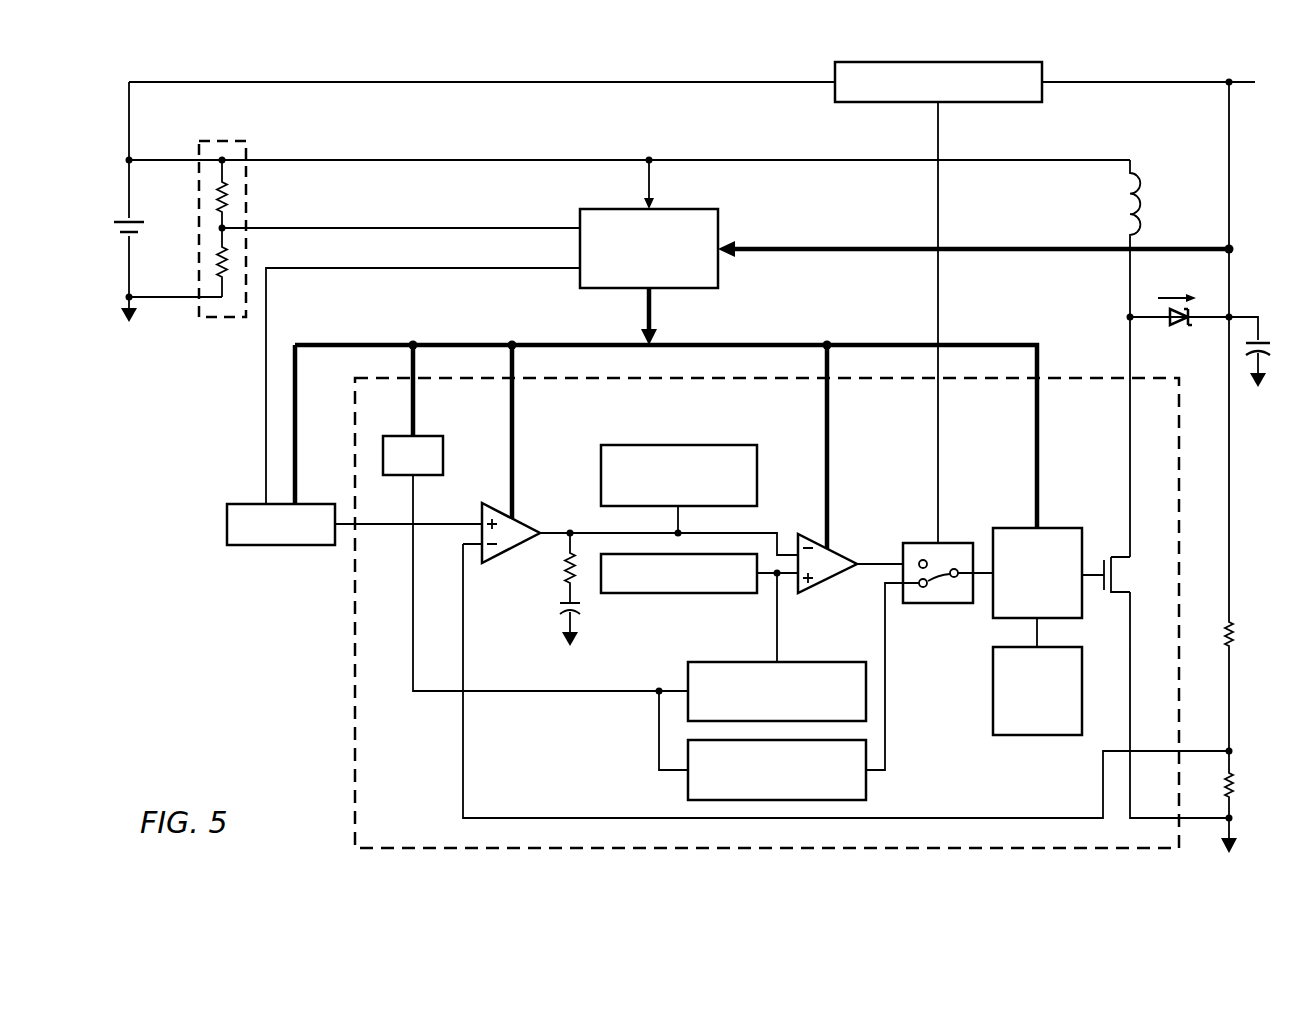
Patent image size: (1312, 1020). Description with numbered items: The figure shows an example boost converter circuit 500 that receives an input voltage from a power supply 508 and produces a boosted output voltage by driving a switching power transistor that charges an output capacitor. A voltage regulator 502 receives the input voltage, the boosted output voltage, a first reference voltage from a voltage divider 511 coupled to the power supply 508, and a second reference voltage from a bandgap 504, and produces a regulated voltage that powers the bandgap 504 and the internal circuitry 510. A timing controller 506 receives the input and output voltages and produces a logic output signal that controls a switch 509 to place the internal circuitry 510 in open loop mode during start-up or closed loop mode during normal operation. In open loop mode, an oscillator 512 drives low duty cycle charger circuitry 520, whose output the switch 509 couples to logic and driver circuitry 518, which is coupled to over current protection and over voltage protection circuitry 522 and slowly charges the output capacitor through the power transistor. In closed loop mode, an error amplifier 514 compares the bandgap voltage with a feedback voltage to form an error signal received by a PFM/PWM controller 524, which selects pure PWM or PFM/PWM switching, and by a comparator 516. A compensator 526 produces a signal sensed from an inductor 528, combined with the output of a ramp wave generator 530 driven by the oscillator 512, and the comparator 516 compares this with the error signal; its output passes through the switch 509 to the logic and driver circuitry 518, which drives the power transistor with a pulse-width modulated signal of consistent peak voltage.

The boost converter circuit 500 is at (152, 648).
The voltage regulator 502 is at (719, 227).
The bandgap 504 is at (296, 547).
The timing controller 506 is at (890, 103).
The power supply 508 is at (113, 229).
The switch 509 is at (940, 604).
The internal circuitry 510 is at (346, 662).
The voltage divider 511 is at (221, 328).
The oscillator 512 is at (425, 436).
The error amplifier 514 is at (524, 521).
The comparator 516 is at (830, 584).
The logic and driver circuitry 518 is at (1058, 528).
The low duty cycle charger circuitry 520 is at (688, 786).
The over current protection and over voltage protection circuitry 522 is at (1042, 736).
The PFM/PWM controller 524 is at (672, 445).
The compensator 526 is at (675, 594).
The inductor 528 is at (1143, 198).
The ramp wave generator 530 is at (737, 662).